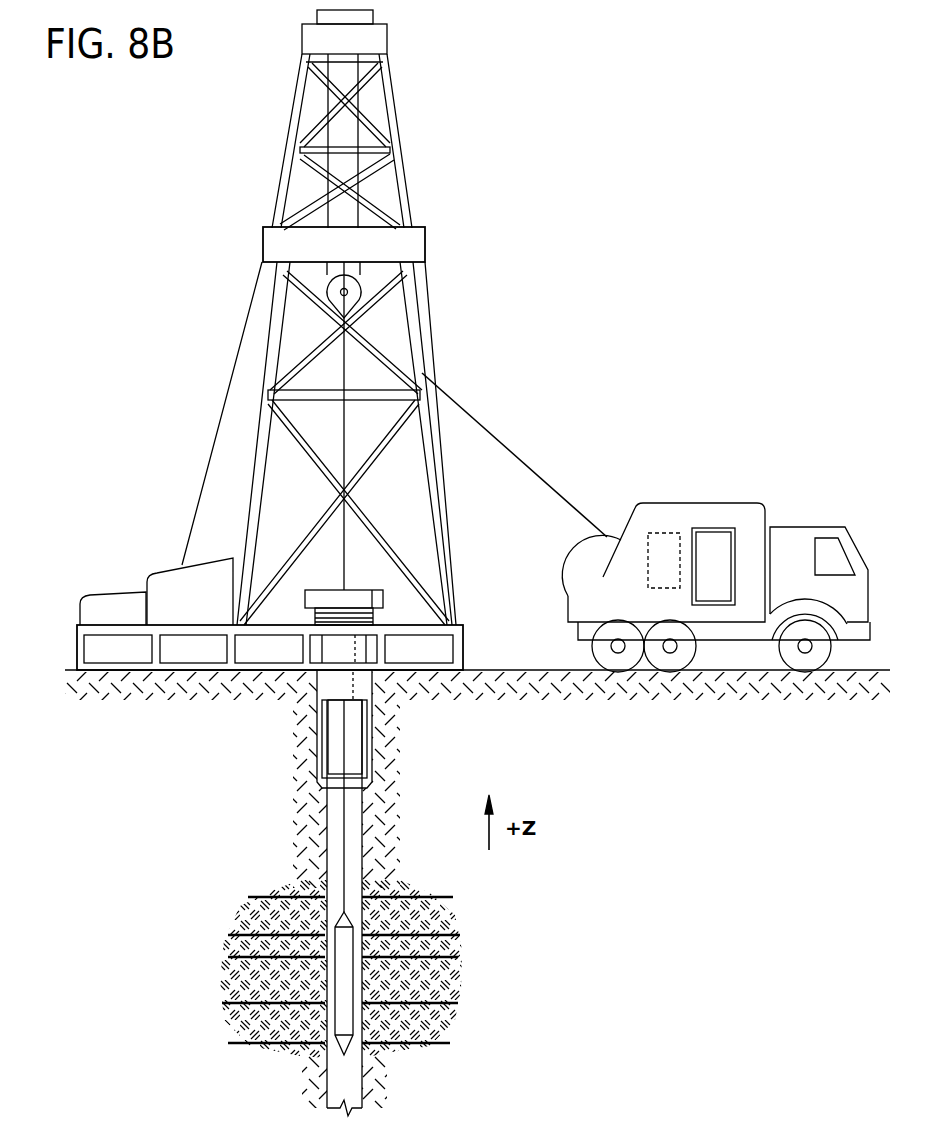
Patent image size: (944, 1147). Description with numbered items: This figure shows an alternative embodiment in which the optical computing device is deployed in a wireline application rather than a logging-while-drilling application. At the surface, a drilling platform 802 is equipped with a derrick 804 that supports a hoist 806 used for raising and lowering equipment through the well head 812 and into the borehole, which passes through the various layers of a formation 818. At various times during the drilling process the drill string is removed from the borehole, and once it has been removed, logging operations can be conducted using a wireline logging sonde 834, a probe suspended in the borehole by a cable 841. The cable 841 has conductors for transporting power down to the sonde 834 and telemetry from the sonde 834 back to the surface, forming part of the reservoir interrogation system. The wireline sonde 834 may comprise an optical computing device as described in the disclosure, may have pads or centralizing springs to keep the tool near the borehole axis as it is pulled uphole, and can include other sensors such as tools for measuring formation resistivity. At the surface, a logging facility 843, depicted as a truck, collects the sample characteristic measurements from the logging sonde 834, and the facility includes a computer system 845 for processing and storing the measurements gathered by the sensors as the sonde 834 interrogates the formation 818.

The drilling platform 802 is at (77, 650).
The derrick 804 is at (405, 183).
The hoist 806 is at (349, 291).
The well head 812 is at (362, 590).
The formation 818 is at (487, 897).
The wireline logging sonde 834 is at (335, 970).
The cable 841 is at (468, 408).
The logging facility 843 is at (733, 502).
The computer system 845 is at (658, 533).